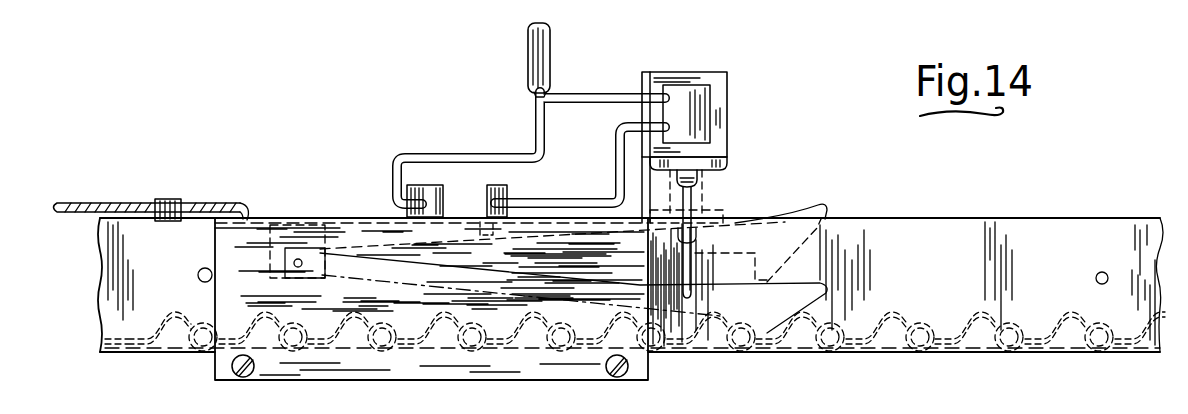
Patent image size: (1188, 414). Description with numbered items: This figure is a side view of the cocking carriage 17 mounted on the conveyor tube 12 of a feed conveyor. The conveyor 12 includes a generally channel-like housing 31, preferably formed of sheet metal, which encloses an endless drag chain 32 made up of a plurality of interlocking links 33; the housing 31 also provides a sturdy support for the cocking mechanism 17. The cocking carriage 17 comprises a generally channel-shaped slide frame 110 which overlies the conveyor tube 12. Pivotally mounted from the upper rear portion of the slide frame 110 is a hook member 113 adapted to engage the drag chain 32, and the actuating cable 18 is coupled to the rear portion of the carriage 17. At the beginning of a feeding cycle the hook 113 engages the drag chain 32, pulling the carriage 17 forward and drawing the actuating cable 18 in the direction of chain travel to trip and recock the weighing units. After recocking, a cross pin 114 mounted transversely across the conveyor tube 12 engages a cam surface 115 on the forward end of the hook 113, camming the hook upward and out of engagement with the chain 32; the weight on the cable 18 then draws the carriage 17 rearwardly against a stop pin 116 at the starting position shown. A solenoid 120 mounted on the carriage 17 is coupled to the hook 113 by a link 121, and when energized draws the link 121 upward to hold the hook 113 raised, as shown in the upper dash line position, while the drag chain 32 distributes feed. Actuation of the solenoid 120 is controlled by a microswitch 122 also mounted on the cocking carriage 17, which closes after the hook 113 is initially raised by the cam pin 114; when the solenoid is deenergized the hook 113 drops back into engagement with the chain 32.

The conveyor tube 12 is at (997, 216).
The cocking carriage 17 is at (348, 212).
The actuating cable 18 is at (78, 204).
The channel-like housing 31 is at (100, 267).
The drag chain 32 is at (189, 316).
The interlocking links 33 is at (963, 310).
The slide frame 110 is at (257, 233).
The hook member 113 is at (827, 206).
The cross pin 114 is at (1108, 278).
The cam surface 115 is at (800, 247).
The stop pin 116 is at (199, 270).
The solenoid 120 is at (730, 107).
The link 121 is at (692, 202).
The microswitch 122 is at (504, 184).